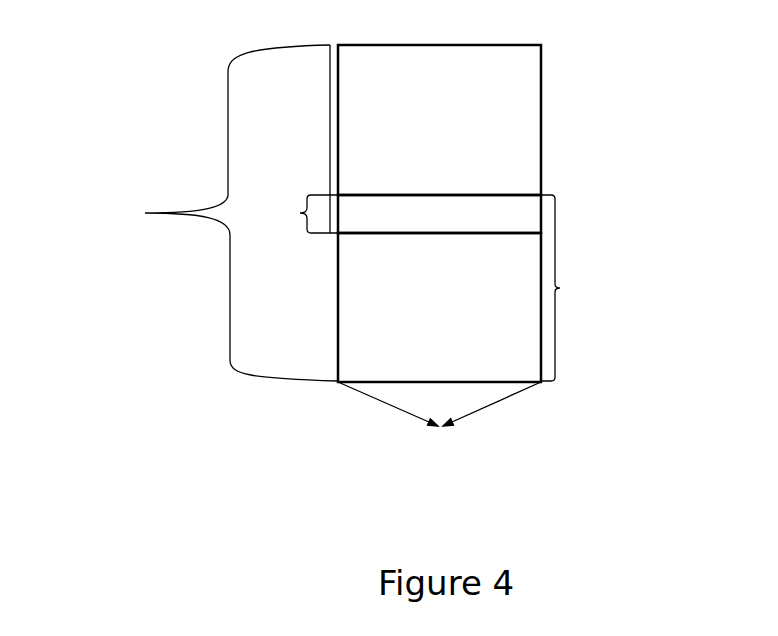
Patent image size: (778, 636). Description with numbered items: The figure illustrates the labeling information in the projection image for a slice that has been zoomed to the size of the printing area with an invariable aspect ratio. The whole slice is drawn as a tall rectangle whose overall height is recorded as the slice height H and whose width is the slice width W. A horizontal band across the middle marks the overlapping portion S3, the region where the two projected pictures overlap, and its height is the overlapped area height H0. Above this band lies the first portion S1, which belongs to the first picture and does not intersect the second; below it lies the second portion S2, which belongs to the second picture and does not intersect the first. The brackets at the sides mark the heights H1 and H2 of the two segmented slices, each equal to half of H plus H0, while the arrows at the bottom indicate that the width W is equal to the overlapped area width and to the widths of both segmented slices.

The whole slice height H is at (145, 213).
The overlapped area height H0 is at (300, 213).
The height of segmented slice P1 H1 is at (330, 142).
The height of segmented slice P2 H2 is at (560, 288).
The first portion S1 is at (515, 112).
The second portion S2 is at (525, 340).
The overlapping portion S3 is at (525, 221).
The whole slice width W is at (452, 446).